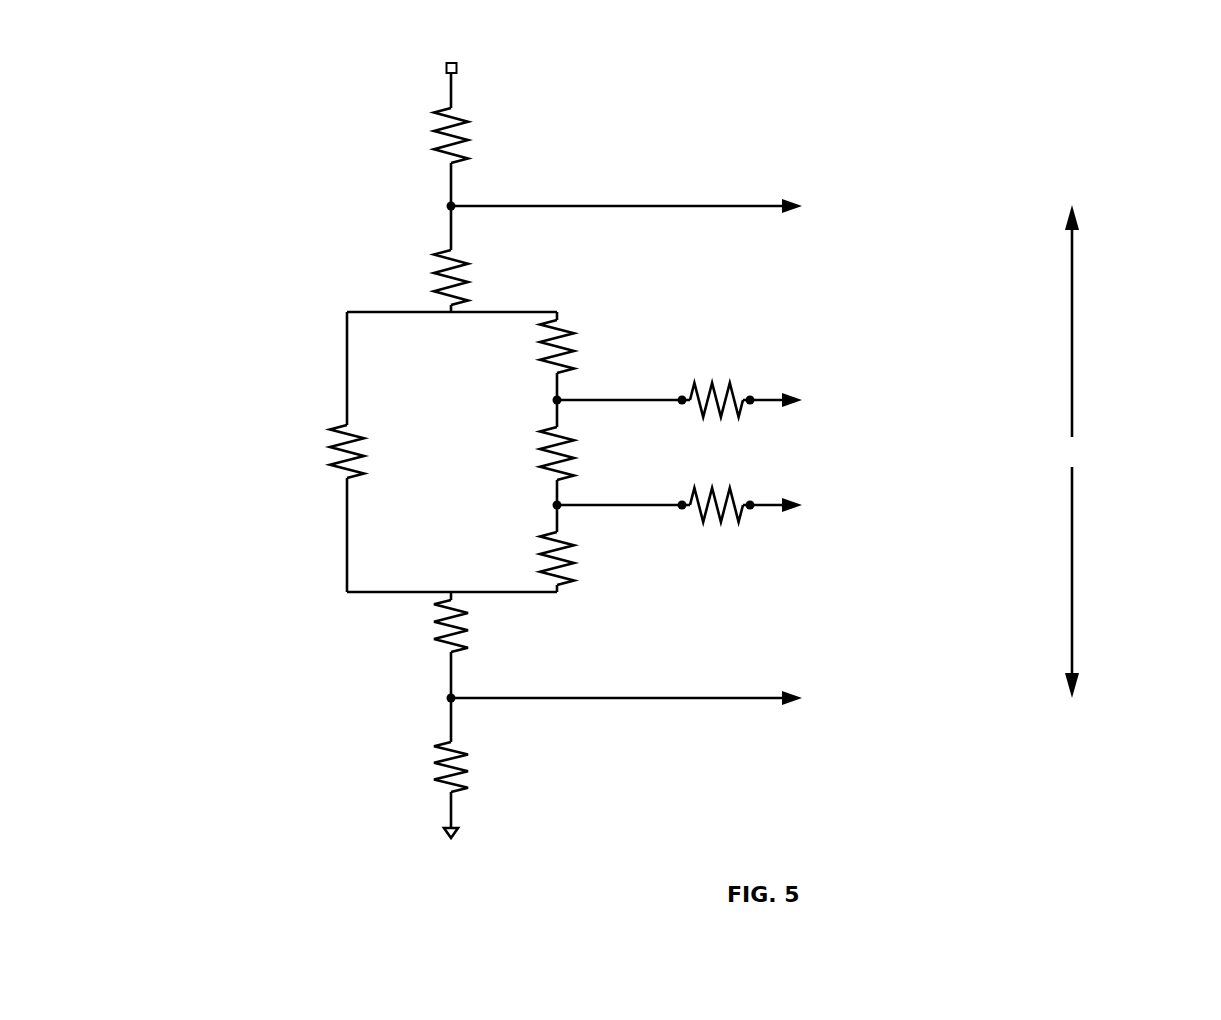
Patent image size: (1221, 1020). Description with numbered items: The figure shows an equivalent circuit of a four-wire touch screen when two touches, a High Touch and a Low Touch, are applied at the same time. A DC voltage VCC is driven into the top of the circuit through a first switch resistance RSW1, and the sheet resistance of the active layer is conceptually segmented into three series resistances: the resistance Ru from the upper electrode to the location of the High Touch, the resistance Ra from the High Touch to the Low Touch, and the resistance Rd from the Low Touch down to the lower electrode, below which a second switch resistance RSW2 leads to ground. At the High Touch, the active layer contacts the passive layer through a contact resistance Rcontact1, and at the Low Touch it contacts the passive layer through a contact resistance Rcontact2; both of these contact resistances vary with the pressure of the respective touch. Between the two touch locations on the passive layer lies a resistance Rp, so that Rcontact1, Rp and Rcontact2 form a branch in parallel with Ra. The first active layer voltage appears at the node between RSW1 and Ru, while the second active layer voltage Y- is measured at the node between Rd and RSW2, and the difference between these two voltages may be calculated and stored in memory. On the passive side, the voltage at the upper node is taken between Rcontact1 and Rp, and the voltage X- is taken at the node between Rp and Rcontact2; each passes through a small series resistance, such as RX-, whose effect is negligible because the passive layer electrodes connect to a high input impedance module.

The DC voltage VCC is at (416, 48).
The first switch resistance RSW1 is at (495, 135).
The resistance Ru is at (479, 277).
The contact resistance Rcontact1 is at (614, 346).
The resistance Ra is at (374, 451).
The resistance Rp is at (586, 453).
The contact resistance Rcontact2 is at (613, 558).
The resistance Rd is at (479, 626).
The second switch resistance RSW2 is at (507, 767).
The resistance RX- is at (722, 521).
The voltage Y- is at (652, 703).
The voltage X- is at (708, 504).
The high touch High Touch is at (536, 396).
The low touch Low Touch is at (526, 507).